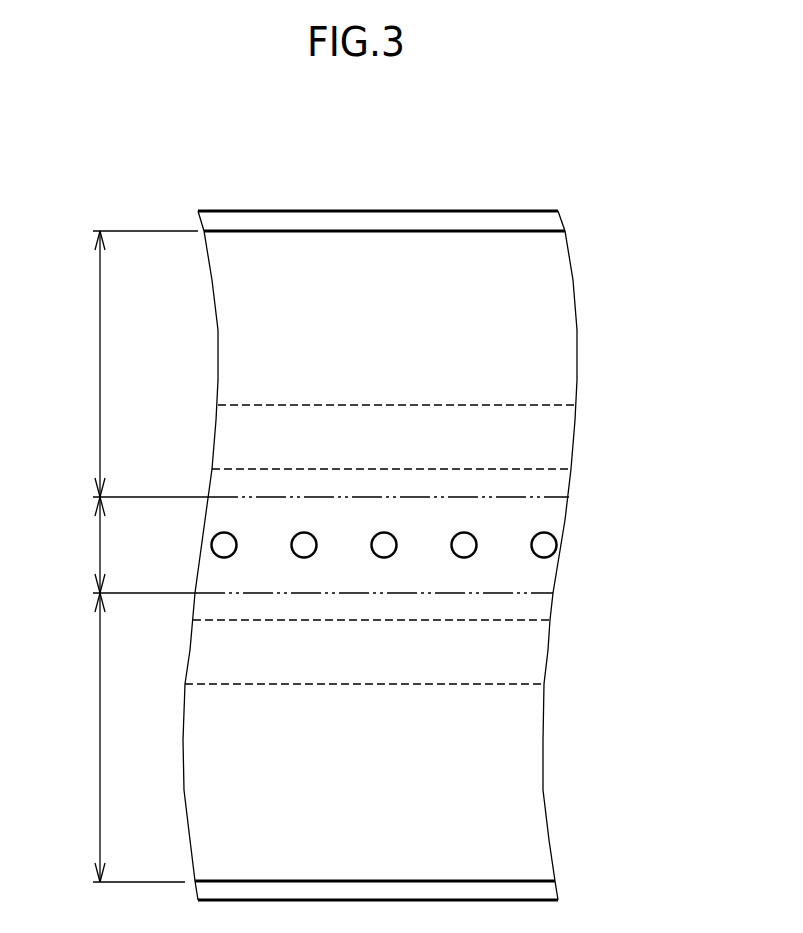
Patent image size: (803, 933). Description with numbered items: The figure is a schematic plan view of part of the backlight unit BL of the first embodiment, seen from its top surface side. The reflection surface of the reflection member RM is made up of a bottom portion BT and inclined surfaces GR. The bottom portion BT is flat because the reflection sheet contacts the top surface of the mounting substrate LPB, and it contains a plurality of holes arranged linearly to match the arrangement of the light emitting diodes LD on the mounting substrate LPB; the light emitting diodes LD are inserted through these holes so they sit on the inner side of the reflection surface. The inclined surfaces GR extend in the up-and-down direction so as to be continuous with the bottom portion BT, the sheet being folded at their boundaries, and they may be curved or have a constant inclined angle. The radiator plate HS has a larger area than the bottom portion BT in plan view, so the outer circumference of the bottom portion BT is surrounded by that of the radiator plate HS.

The backlight unit BL is at (385, 187).
The reflection member RM is at (575, 292).
The radiator plate HS is at (545, 405).
The mounting substrate LPB is at (545, 469).
The light emitting diodes LD is at (548, 545).
The inclined surfaces GR is at (301, 556).
The bottom portion BT is at (310, 545).